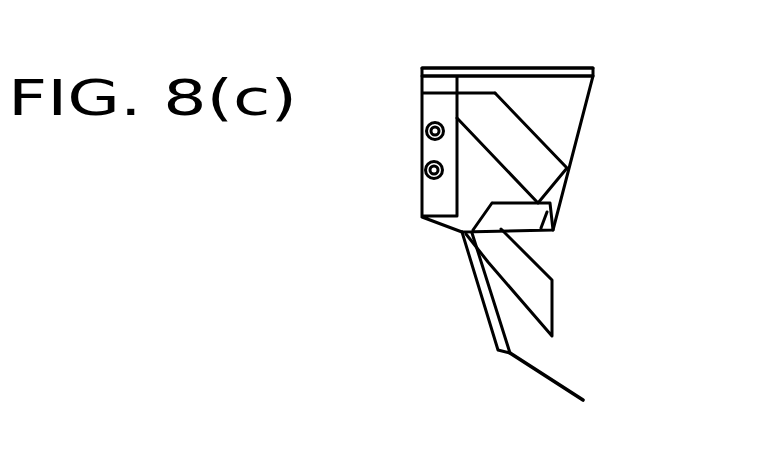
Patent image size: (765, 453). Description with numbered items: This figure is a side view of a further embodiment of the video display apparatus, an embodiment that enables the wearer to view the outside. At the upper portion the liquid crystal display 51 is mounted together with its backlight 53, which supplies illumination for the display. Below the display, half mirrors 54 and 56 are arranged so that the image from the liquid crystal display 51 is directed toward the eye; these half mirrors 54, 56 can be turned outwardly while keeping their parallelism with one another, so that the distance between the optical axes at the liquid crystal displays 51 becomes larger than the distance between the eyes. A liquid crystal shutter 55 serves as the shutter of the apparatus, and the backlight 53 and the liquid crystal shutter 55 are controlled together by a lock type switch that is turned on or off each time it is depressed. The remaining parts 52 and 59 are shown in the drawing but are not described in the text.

The liquid crystal display 51 is at (458, 132).
The clamp block 52 is at (496, 218).
The backlight 53 is at (424, 163).
The half mirror 54 is at (544, 296).
The liquid crystal shutter 55 is at (510, 332).
The half mirror 56 is at (495, 112).
The top plate 59 is at (547, 77).